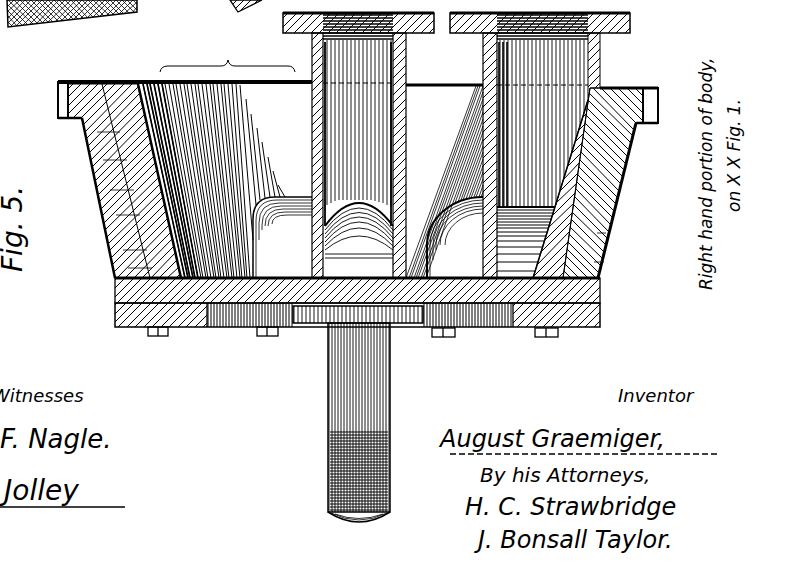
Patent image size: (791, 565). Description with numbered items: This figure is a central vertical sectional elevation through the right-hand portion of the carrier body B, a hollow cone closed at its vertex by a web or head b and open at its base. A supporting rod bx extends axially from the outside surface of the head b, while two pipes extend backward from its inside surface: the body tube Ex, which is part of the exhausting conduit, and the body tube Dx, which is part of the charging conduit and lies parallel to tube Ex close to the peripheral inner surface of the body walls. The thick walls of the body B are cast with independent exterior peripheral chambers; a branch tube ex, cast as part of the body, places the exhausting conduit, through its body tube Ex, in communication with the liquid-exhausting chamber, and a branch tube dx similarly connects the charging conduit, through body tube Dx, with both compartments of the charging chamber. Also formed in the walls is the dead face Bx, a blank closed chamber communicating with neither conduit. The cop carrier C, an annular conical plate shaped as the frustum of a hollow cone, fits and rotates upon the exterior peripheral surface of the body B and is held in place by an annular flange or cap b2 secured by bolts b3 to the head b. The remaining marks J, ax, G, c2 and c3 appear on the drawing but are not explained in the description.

The carrier body B is at (321, 156).
The dead face Bx is at (130, 160).
The cop carrier C is at (118, 228).
The flange of body J is at (58, 97).
The body tube of the exhausting conduit Ex is at (358, 145).
The body tube of the charging conduit Dx is at (540, 145).
The web or head b is at (214, 181).
The branch tube of the exhausting conduit ex is at (323, 237).
The chamber ax is at (455, 237).
The branch tube of the charging conduit dx is at (523, 242).
The annular flange or cap b2 is at (205, 329).
The bolts b3 is at (268, 338).
The supporting rod bx is at (360, 523).
The body portion G is at (33, 220).
The wall portion c2 is at (600, 233).
The wall portion c3 is at (604, 262).